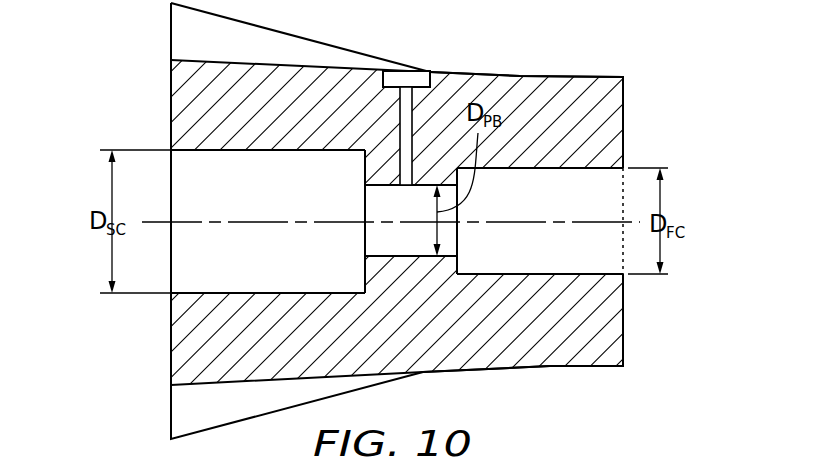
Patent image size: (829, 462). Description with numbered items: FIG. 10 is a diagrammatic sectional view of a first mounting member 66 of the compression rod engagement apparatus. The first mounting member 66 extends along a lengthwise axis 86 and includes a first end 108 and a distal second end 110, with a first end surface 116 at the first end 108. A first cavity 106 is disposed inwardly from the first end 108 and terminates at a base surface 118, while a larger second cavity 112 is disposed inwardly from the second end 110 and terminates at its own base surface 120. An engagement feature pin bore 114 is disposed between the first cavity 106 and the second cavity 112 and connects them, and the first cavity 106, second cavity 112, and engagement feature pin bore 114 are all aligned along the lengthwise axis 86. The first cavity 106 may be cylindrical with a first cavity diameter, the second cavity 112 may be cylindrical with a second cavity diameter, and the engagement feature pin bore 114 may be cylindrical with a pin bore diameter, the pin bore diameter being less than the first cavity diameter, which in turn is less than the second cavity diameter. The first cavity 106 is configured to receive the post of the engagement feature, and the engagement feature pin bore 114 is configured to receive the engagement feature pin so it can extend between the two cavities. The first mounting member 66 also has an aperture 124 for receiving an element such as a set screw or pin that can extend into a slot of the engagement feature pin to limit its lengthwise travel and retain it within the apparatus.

The first mounting member 66 is at (705, 185).
The lengthwise axis 86 is at (183, 225).
The first cavity 106 is at (567, 207).
The first end 108 is at (630, 131).
The second end 110 is at (166, 352).
The second cavity 112 is at (335, 276).
The engagement feature pin bore 114 is at (397, 238).
The first end surface 116 is at (623, 330).
The base surface 118 is at (458, 265).
The base surface 120 is at (363, 163).
The aperture 124 is at (408, 118).